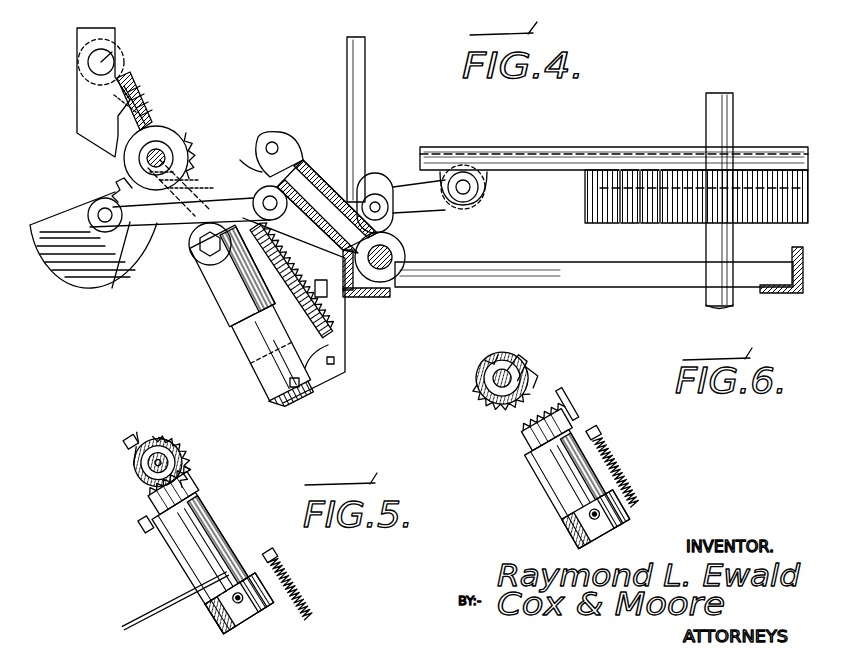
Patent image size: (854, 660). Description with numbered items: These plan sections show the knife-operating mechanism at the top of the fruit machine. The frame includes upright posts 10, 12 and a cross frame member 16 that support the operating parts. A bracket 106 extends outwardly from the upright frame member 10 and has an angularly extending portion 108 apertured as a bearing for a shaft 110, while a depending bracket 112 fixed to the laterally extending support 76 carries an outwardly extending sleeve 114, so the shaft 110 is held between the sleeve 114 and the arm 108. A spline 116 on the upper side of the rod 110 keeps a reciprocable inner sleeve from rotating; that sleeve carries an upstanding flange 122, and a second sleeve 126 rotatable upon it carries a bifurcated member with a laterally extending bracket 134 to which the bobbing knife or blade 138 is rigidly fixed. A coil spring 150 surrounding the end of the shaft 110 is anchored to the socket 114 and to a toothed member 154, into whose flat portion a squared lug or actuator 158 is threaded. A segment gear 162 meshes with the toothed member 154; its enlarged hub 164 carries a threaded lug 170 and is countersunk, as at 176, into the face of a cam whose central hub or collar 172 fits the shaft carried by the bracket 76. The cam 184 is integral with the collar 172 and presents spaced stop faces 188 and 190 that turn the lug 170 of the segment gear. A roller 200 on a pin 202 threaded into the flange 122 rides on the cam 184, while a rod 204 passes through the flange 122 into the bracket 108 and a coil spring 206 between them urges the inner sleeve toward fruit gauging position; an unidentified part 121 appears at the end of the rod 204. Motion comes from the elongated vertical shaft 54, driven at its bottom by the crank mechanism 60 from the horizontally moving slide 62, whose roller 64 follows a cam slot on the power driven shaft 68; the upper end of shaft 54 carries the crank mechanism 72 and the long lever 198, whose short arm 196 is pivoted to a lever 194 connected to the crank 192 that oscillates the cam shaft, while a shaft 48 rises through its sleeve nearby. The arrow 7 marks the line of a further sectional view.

In FIG. 4, the section line 7 is at (303, 400).
In FIG. 4, the upright post 10 is at (167, 243).
In FIG. 4, the upright post 12 is at (775, 294).
In FIG. 4, the cross frame member 16 is at (667, 284).
In FIG. 4, the shaft 48 is at (112, 63).
In FIG. 4, the elongated vertically extending shaft 54 is at (403, 258).
In FIG. 4, the crank mechanism 60 is at (405, 193).
In FIG. 4, the horizontally moving slide 62 is at (526, 172).
In FIG. 4, the roller 64 is at (632, 187).
In FIG. 4, the power driven shaft 68 is at (718, 304).
In FIG. 4, the crank mechanism 72 is at (348, 178).
In FIG. 4, the bracket 76 is at (85, 121).
In FIG. 4, the bracket 106 is at (343, 343).
In FIG. 4, the angularly extending portion 108 is at (268, 411).
In FIG. 4, the shaft 110 is at (262, 345).
In FIG. 5, the shaft 110 is at (218, 547).
In FIG. 6, the shaft 110 is at (577, 487).
In FIG. 4, the depending bracket 112 is at (80, 90).
In FIG. 4, the sleeve 114 is at (125, 66).
In FIG. 4, the spline 116 is at (268, 365).
In FIG. 5, the spline 116 is at (208, 525).
In FIG. 6, the screw head 121 is at (607, 437).
In FIG. 4, the upstanding flange 122 is at (282, 230).
In FIG. 4, the second sleeve 126 is at (196, 19).
In FIG. 5, the bracket 134 is at (217, 590).
In FIG. 5, the bobbing knife 138 is at (133, 618).
In FIG. 6, the bobbing knife 138 is at (577, 410).
In FIG. 4, the coil spring 150 is at (106, 100).
In FIG. 5, the toothed member 154 is at (203, 493).
In FIG. 6, the toothed member 154 is at (510, 432).
In FIG. 5, the squared lug 158 is at (150, 531).
In FIG. 5, the segment gear 162 is at (167, 430).
In FIG. 6, the segment gear 162 is at (473, 407).
In FIG. 5, the enlarged hub 164 is at (143, 443).
In FIG. 5, the lug 170 is at (132, 448).
In FIG. 6, the lug 170 is at (540, 377).
In FIG. 4, the central hub or collar 172 is at (43, 221).
In FIG. 5, the central hub or collar 172 is at (190, 473).
In FIG. 4, the countersink 176 is at (130, 210).
In FIG. 5, the countersink 176 is at (130, 490).
In FIG. 6, the countersink 176 is at (500, 380).
In FIG. 4, the cam 184 is at (67, 250).
In FIG. 5, the stop face 188 is at (150, 465).
In FIG. 6, the stop face 188 is at (508, 348).
In FIG. 4, the stop face 190 is at (238, 400).
In FIG. 5, the stop face 190 is at (185, 437).
In FIG. 6, the stop face 190 is at (553, 380).
In FIG. 4, the crank 192 is at (100, 196).
In FIG. 4, the lever 194 is at (227, 207).
In FIG. 4, the short arm 196 is at (186, 148).
In FIG. 4, the long lever 198 is at (283, 139).
In FIG. 4, the roller 200 is at (220, 287).
In FIG. 4, the pin 202 is at (200, 260).
In FIG. 4, the rod 204 is at (312, 310).
In FIG. 5, the rod 204 is at (283, 567).
In FIG. 6, the rod 204 is at (593, 428).
In FIG. 4, the coil spring 206 is at (325, 372).
In FIG. 5, the coil spring 206 is at (305, 587).